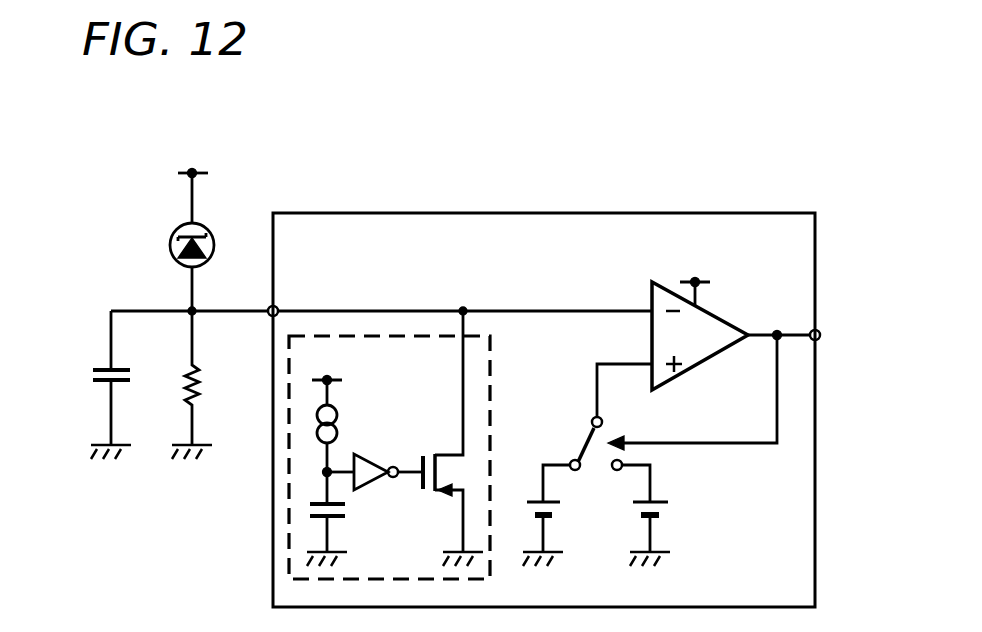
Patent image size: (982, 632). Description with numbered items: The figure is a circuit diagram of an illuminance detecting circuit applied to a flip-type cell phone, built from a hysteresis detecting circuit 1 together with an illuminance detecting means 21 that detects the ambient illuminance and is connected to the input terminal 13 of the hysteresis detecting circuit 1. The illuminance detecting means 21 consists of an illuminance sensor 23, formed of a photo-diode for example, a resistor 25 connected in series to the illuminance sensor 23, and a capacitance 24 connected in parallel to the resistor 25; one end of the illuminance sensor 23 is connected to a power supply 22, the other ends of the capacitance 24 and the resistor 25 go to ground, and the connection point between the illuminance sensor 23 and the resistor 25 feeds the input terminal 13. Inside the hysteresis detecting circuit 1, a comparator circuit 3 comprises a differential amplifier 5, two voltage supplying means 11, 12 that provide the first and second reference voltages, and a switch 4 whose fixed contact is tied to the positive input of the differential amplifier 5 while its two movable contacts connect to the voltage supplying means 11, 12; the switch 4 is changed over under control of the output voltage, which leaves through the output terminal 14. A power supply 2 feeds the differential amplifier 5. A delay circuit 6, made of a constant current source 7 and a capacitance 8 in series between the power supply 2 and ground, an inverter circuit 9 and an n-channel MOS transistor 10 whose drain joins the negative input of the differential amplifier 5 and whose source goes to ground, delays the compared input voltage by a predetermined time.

The hysteresis detecting circuit 1 is at (590, 213).
The power supply 2 is at (332, 378).
The comparator circuit 3 is at (724, 306).
The switch 4 is at (582, 434).
The differential amplifier 5 is at (710, 352).
The delay circuit 6 is at (490, 362).
The constant current source 7 is at (340, 420).
The capacitance 8 is at (346, 510).
The inverter circuit 9 is at (373, 465).
The n-channel MOS transistor 10 is at (438, 495).
The voltage supplying means 11 is at (563, 511).
The voltage supplying means 12 is at (668, 508).
The input terminal 13 is at (277, 306).
The output terminal 14 is at (820, 331).
The illuminance detecting means 21 is at (96, 295).
The power supply 22 is at (200, 172).
The illuminance sensor 23 is at (170, 244).
The capacitance (C1) 24 is at (92, 375).
The resistor (R1) 25 is at (200, 383).